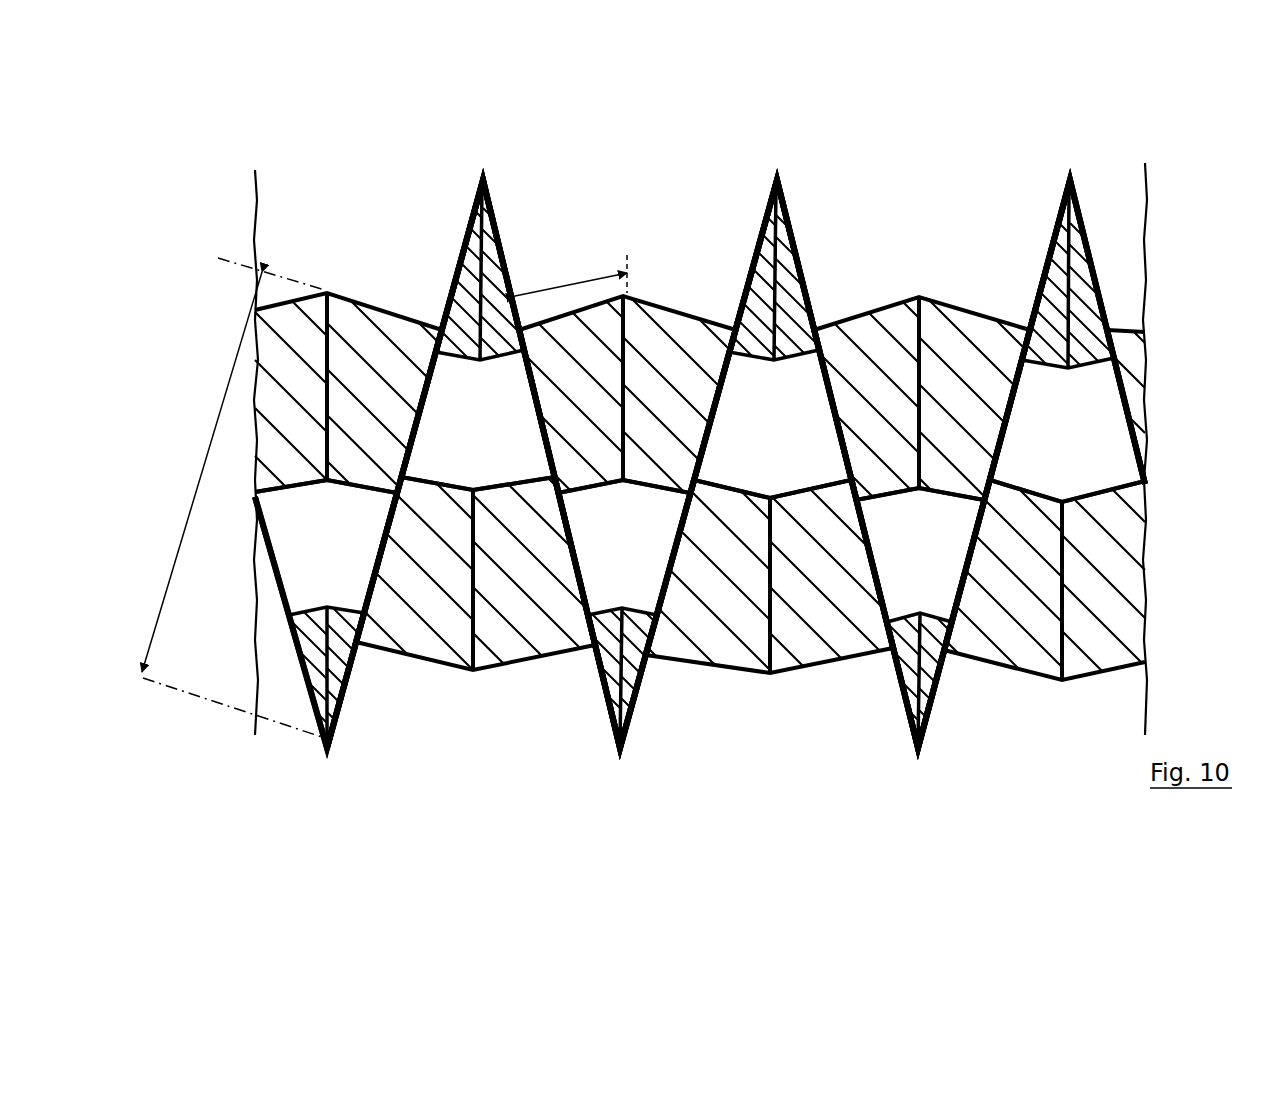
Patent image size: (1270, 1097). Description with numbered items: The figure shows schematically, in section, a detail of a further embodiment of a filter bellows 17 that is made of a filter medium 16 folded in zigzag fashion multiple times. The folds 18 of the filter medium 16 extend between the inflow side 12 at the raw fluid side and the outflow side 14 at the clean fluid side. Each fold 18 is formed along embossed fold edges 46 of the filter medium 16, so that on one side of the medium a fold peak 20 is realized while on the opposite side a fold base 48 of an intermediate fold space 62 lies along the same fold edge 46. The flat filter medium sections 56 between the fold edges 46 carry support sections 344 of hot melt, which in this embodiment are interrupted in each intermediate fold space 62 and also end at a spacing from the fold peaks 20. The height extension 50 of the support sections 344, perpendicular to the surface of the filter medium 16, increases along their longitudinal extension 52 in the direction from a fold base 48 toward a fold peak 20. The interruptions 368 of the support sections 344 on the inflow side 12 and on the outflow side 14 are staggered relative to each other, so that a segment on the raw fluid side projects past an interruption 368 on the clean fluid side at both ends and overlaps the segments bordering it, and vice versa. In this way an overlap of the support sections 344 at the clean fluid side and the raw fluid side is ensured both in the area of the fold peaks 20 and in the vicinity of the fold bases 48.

The inflow side 12 is at (355, 138).
The outflow side 14 is at (803, 740).
The filter medium 16 is at (1124, 383).
The filter bellows 17 is at (412, 186).
The folds 18 is at (481, 724).
The fold peak 20 is at (482, 178).
The fold edges 46 is at (485, 178).
The fold base 48 is at (476, 262).
The height extension 50 is at (570, 278).
The longitudinal extension 52 is at (256, 323).
The filter medium section 56 is at (533, 403).
The intermediate fold space 62 is at (348, 245).
The support sections 344 is at (310, 327).
The interruptions 368 is at (311, 530).